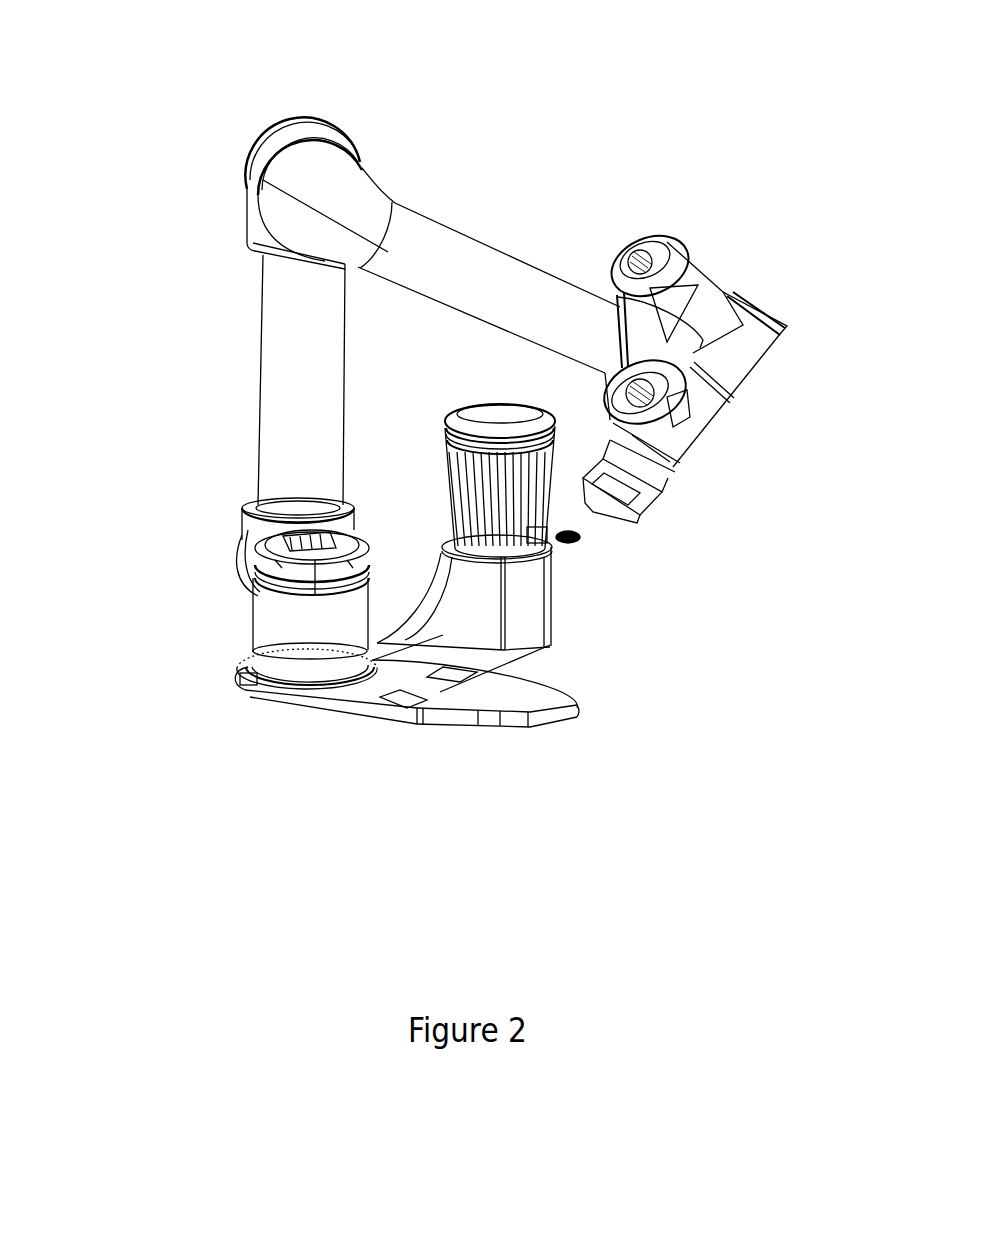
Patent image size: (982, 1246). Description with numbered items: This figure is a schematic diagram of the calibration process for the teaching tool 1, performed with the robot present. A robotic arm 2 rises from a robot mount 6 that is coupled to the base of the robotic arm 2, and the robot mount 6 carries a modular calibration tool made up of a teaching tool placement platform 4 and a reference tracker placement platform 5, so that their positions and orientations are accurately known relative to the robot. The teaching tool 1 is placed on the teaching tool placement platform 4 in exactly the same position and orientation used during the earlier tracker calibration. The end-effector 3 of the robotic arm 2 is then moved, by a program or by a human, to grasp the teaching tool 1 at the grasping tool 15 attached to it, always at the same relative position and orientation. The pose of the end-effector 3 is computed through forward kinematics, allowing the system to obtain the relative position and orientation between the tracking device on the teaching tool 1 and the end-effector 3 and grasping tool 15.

The teaching tool 1 is at (528, 395).
The robotic arm 2 is at (243, 142).
The end-effector 3 is at (677, 503).
The teaching tool placement platform 4 is at (565, 618).
The reference tracker placement platform 5 is at (483, 737).
The robot mount 6 is at (310, 717).
The grasping tool 15 is at (588, 545).